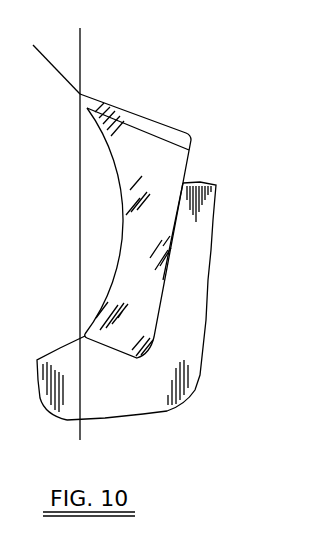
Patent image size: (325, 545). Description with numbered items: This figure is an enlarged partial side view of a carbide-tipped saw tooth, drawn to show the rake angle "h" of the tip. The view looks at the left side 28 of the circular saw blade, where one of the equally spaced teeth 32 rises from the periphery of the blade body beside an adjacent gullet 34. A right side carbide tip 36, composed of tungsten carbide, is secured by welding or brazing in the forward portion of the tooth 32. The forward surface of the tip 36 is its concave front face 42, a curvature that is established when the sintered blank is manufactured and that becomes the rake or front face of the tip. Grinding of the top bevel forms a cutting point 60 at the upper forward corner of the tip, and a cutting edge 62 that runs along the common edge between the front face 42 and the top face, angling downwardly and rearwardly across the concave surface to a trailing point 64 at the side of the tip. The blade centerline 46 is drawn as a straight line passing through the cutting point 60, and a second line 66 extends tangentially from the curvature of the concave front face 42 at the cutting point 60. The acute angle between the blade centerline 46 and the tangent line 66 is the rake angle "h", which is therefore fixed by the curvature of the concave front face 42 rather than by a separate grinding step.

The left side 28 is at (178, 368).
The tooth 32 is at (203, 184).
The gullet 34 is at (63, 352).
The right side carbide tip 36 is at (172, 242).
The concave front face 42 is at (118, 238).
The blade centerline 46 is at (81, 48).
The cutting point 60 is at (80, 94).
The cutting edge 62 is at (86, 105).
The trailing point 64 is at (87, 104).
The tangent line 66 is at (52, 65).